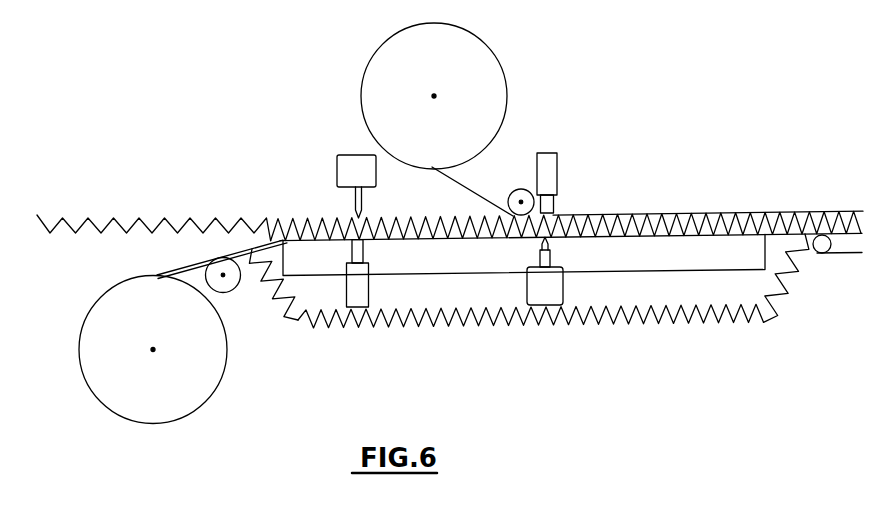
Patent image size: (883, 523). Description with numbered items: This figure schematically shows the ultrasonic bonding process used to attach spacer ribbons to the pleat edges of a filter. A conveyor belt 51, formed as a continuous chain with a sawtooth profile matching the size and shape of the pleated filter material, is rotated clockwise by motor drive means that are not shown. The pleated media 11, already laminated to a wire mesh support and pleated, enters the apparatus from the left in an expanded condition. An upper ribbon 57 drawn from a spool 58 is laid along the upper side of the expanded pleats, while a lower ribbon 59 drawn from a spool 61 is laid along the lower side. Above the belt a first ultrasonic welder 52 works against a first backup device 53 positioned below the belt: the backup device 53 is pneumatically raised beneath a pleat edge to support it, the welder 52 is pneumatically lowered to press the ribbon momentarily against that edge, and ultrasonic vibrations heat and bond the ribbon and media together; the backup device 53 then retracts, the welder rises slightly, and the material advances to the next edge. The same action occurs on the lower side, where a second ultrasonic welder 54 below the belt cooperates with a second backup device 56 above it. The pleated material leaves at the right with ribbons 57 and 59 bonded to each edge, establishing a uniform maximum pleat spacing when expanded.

The pleated media 11 is at (84, 233).
The conveyor belt 51 is at (388, 325).
The first ultrasonic welder 52 is at (553, 167).
The first backup device 53 is at (550, 297).
The second ultrasonic welder 54 is at (358, 304).
The second backup device 56 is at (340, 170).
The upper ribbon 57 is at (473, 189).
The spool 58 is at (490, 97).
The lower ribbon 59 is at (205, 252).
The spool 61 is at (105, 373).